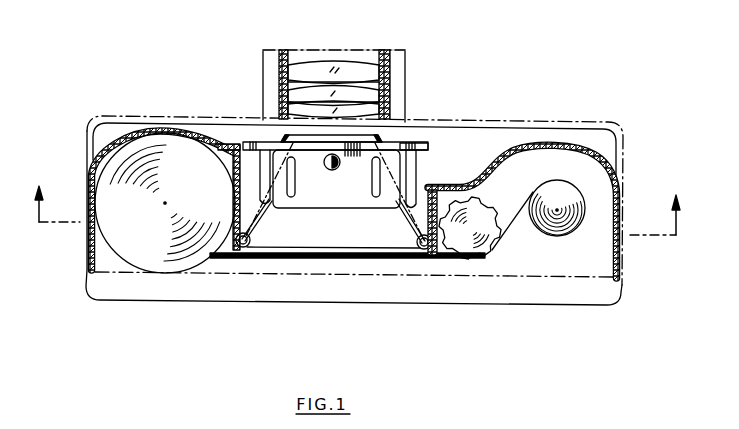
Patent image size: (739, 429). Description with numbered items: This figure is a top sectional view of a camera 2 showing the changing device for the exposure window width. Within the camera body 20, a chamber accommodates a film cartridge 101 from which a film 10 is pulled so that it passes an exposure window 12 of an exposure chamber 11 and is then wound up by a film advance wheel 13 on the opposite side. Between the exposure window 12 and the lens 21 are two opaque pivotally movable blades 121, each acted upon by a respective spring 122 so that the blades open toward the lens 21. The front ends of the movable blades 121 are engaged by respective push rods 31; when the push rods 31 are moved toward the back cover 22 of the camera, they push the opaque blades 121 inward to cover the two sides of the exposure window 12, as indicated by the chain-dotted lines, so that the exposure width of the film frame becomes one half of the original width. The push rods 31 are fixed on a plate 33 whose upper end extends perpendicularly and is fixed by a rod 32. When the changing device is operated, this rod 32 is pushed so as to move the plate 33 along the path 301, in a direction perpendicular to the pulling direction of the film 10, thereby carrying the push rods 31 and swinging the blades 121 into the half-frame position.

The camera 2 is at (358, 199).
The camera body 20 is at (215, 122).
The lens 21 is at (365, 92).
The back cover 22 is at (533, 290).
The film 10 is at (222, 250).
The film cartridge 101 is at (143, 258).
The exposure chamber 11 is at (353, 258).
The exposure window 12 is at (291, 258).
The opaque pivotally movable blades 121 is at (398, 212).
The springs 122 is at (258, 226).
The film advance wheel 13 is at (538, 230).
The push rods 31 is at (420, 163).
The rod 32 is at (327, 165).
The plate 33 is at (422, 143).
The path 301 is at (298, 182).